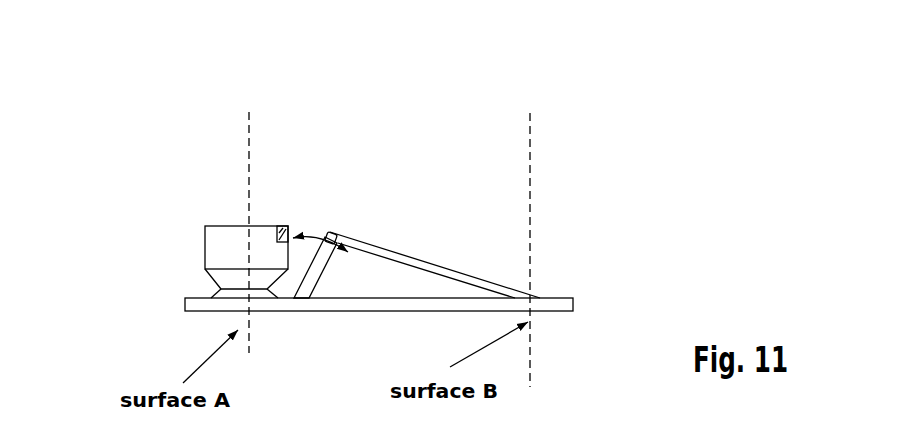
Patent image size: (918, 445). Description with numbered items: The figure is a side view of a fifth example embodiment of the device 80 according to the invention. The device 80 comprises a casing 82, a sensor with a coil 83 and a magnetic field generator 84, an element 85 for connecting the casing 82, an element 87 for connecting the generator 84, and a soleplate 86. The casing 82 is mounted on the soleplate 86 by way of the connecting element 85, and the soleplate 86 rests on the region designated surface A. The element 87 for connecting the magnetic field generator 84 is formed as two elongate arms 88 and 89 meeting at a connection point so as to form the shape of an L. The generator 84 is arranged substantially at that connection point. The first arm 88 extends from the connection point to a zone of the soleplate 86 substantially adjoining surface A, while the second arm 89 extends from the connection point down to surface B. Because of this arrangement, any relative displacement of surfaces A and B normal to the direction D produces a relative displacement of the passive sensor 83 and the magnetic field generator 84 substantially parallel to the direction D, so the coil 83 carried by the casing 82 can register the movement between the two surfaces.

The device 80 is at (162, 188).
The casing 82 is at (220, 245).
The sensor with a coil 83 is at (282, 228).
The magnetic field generator 84 is at (331, 233).
The element for connecting the casing 85 is at (227, 283).
The soleplate 86 is at (440, 303).
The element for connecting the generator 87 is at (380, 222).
The first arm 88 is at (428, 268).
The second arm 89 is at (311, 277).